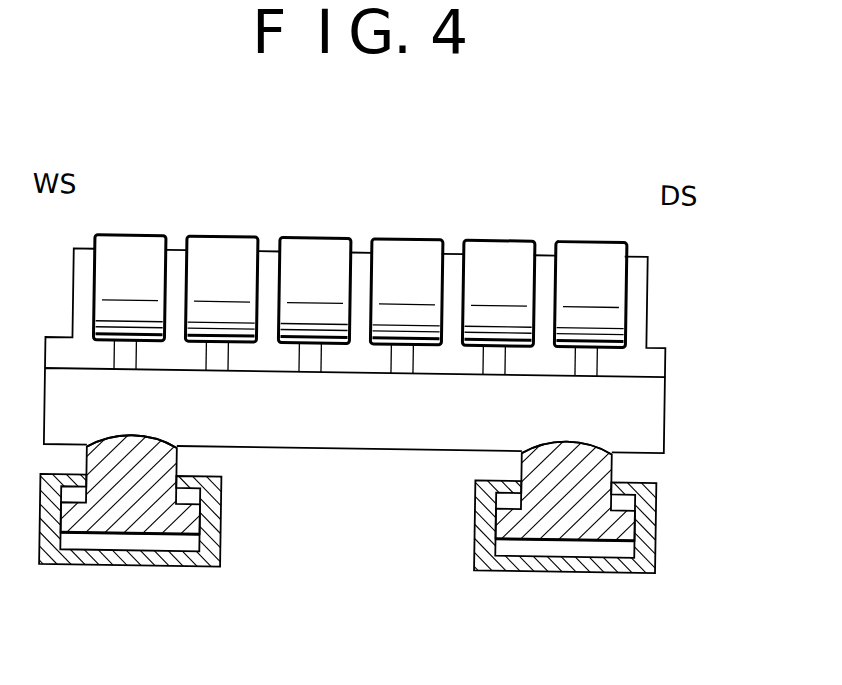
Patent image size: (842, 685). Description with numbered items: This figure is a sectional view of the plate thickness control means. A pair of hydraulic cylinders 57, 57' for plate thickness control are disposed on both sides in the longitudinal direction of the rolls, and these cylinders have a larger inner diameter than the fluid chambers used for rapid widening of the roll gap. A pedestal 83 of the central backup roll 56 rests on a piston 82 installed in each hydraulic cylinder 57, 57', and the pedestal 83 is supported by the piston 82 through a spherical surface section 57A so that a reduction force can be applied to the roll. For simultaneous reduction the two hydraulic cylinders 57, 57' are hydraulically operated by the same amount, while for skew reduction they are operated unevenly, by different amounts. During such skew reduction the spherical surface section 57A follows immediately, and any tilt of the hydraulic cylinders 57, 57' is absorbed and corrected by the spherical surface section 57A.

The central backup roll 56 is at (648, 288).
The pedestal 83 is at (667, 411).
The hydraulic cylinder 57 is at (163, 521).
The hydraulic cylinder 57' is at (567, 528).
The spherical surface section 57A is at (152, 435).
The piston 82 is at (125, 509).